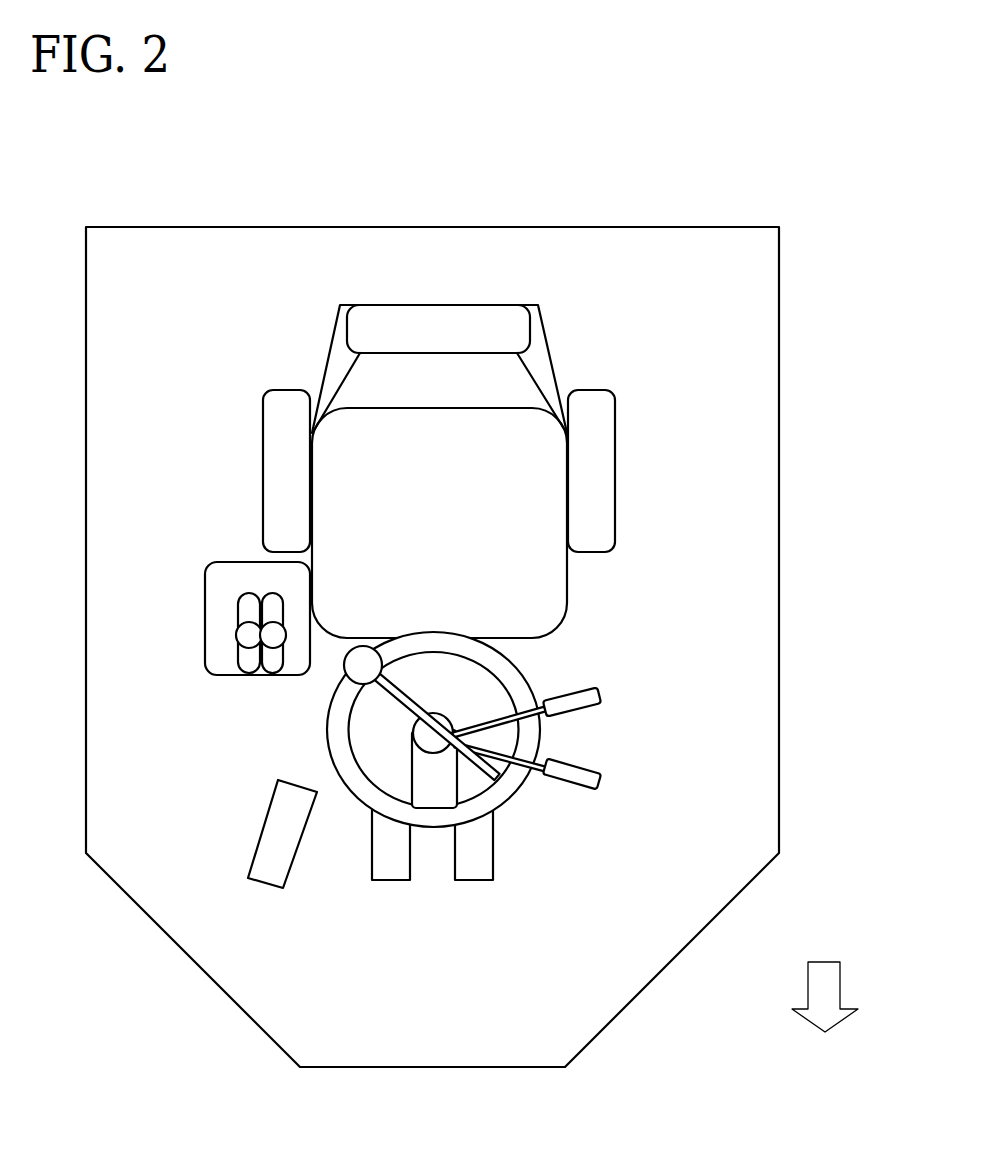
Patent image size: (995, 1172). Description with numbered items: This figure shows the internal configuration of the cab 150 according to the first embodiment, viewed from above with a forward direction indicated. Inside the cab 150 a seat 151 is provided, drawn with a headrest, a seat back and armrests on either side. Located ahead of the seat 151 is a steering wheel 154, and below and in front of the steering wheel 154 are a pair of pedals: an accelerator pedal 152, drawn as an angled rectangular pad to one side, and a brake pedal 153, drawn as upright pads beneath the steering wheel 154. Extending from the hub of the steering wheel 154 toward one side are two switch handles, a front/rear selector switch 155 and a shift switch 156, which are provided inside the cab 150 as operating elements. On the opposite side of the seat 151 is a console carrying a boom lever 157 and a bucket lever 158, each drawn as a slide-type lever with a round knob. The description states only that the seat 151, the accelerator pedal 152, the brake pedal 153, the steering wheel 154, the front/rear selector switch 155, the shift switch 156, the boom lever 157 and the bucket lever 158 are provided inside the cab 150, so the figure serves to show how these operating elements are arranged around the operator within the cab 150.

The cab 150 is at (604, 184).
The seat 151 is at (453, 304).
The accelerator pedal 152 is at (262, 826).
The brake pedal 153 is at (392, 881).
The steering wheel 154 is at (510, 797).
The front/rear selector switch 155 is at (600, 782).
The shift switch 156 is at (600, 692).
The boom lever 157 is at (238, 635).
The bucket lever 158 is at (272, 650).